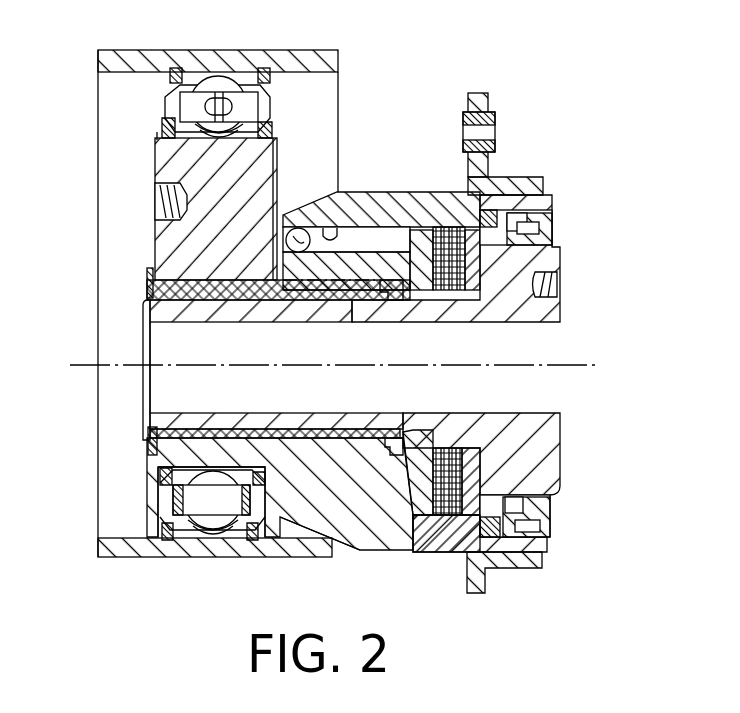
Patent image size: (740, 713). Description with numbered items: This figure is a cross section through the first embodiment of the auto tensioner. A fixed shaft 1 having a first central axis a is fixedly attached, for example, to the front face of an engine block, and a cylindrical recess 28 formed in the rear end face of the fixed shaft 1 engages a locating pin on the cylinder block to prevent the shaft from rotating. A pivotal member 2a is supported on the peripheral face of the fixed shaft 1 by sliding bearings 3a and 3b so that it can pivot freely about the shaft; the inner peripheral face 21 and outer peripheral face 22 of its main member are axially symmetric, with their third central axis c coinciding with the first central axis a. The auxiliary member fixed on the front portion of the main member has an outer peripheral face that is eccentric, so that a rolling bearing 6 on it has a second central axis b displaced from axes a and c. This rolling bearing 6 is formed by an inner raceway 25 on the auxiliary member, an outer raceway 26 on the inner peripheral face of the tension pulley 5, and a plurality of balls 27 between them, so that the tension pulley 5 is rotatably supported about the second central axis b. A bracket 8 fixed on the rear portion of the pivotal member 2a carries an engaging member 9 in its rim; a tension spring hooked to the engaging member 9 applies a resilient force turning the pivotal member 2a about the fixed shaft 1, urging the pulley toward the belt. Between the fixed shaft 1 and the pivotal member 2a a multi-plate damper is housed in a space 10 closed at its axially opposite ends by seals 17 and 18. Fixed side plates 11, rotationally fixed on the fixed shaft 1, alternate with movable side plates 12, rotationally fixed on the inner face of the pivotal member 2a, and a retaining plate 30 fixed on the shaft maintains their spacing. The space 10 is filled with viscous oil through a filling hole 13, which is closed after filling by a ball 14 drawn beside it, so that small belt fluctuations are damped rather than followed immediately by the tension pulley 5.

The fixed shaft 1 is at (560, 450).
The pivotal member 2a is at (360, 527).
The sliding bearing 3a is at (148, 440).
The sliding bearing 3b is at (490, 212).
The tension pulley 5 is at (338, 63).
The rolling bearing 6 is at (237, 80).
The bracket 8 is at (490, 97).
The engaging member 9 is at (497, 130).
The space 10 is at (421, 517).
The fixed side plates 11 is at (455, 458).
The movable side plates 12 is at (452, 228).
The filling hole 13 is at (330, 237).
The seal holder 14 is at (300, 228).
The seal 17 is at (554, 214).
The seal 18 is at (380, 292).
The inner peripheral face 21 is at (227, 413).
The outer peripheral face 22 is at (203, 450).
The inner raceway 25 is at (170, 535).
The outer raceway 26 is at (217, 80).
The balls 27 is at (208, 84).
The cylindrical recess 28 is at (558, 284).
The retaining plate 30 is at (405, 497).
The first central axis a is at (584, 364).
The second central axis b is at (345, 265).
The third central axis c is at (120, 362).